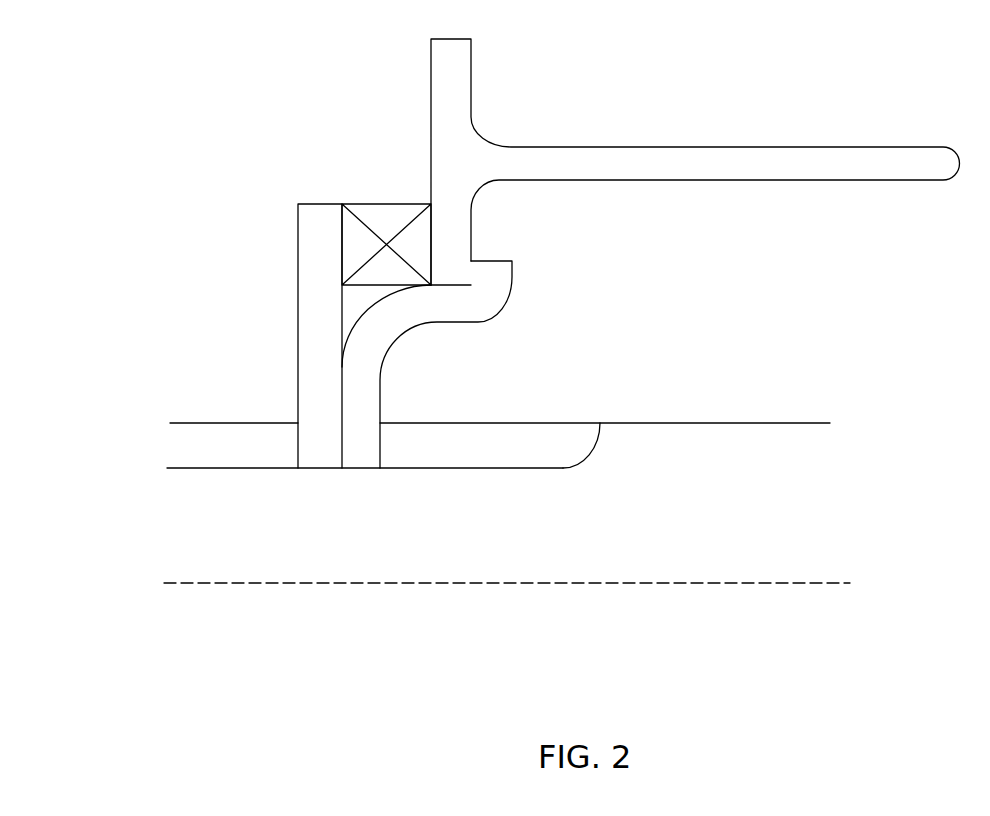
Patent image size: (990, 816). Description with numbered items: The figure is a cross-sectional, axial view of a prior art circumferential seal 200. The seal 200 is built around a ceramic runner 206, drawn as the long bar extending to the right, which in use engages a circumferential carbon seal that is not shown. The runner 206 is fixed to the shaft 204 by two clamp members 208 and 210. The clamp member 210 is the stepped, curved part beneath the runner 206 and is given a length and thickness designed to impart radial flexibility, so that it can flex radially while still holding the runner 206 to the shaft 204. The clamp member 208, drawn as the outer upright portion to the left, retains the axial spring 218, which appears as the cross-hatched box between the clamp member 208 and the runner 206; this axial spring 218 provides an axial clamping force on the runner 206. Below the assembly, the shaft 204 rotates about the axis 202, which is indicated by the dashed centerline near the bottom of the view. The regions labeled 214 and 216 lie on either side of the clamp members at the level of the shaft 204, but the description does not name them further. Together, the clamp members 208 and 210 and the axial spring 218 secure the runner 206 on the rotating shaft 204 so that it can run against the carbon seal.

The circumferential seal 200 is at (886, 89).
The axis 202 is at (239, 592).
The shaft 204 is at (562, 533).
The ceramic runner 206 is at (692, 172).
The clamp member 208 is at (300, 318).
The clamp member 210 is at (463, 314).
The dielectric region 214 is at (483, 458).
The dielectric region 216 is at (218, 458).
The axial spring 218 is at (362, 194).